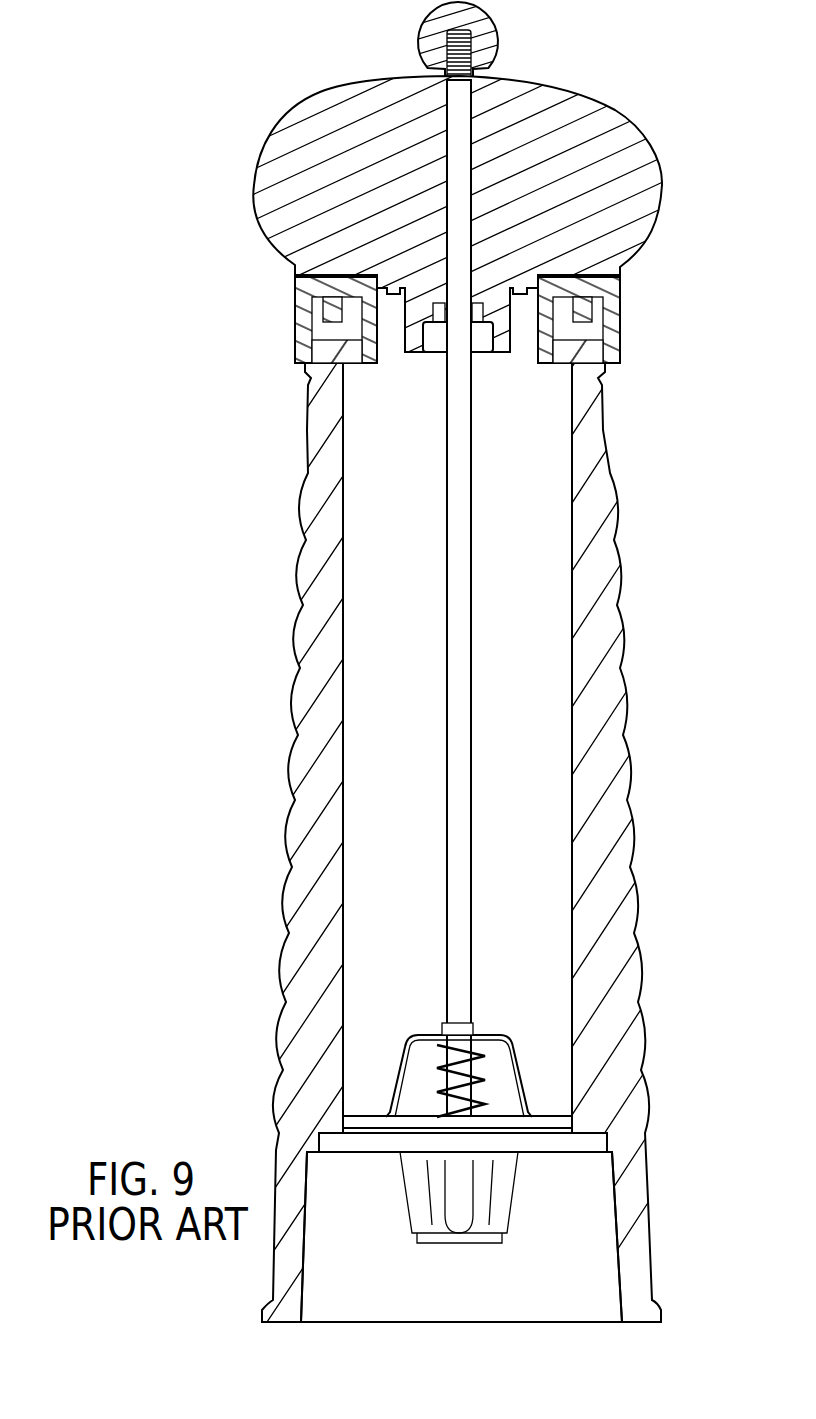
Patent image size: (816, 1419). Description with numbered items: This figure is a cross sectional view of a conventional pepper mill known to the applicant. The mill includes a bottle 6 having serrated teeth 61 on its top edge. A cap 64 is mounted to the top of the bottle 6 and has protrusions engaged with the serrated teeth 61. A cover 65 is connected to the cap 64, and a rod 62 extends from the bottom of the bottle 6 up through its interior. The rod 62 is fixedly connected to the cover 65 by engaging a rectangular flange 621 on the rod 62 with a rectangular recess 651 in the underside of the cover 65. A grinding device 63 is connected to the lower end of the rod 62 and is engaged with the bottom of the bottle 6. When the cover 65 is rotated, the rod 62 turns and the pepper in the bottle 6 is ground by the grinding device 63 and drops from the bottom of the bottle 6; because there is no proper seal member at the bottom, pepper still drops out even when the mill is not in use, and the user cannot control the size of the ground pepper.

The bottle 6 is at (623, 670).
The serrated teeth 61 is at (340, 330).
The rod 62 is at (460, 868).
The rectangular flange 621 is at (445, 343).
The grinding device 63 is at (500, 1197).
The cap 64 is at (610, 327).
The cover 65 is at (635, 147).
The rectangular recess 651 is at (478, 350).